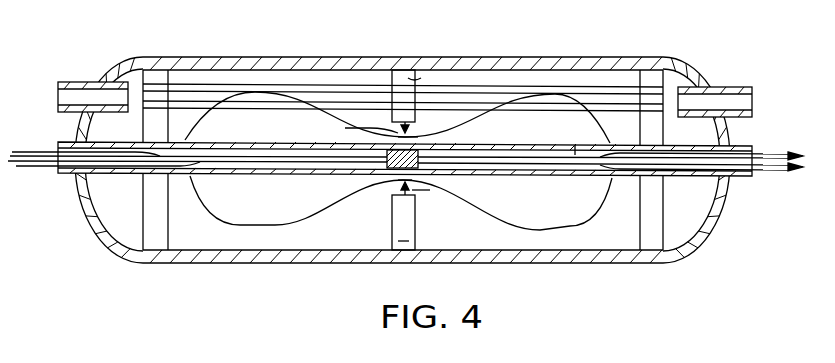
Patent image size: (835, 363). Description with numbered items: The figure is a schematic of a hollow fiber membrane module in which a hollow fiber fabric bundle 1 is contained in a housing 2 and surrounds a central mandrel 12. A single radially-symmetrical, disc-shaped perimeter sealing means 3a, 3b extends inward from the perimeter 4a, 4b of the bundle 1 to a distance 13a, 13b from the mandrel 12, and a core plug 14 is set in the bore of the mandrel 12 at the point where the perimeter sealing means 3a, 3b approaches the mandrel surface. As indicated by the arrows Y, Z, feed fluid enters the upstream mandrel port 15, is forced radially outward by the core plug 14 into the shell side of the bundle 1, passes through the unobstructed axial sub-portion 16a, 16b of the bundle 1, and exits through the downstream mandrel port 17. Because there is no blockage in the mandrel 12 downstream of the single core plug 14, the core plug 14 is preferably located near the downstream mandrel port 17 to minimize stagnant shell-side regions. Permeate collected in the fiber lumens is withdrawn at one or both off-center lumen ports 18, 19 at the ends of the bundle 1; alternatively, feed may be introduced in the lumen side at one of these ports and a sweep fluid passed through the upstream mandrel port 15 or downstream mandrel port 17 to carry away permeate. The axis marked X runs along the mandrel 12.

The hollow fiber fabric bundle 1 is at (186, 103).
The housing 2 is at (607, 58).
The perimeter sealing means 3a is at (421, 76).
The perimeter sealing means 3b is at (408, 238).
The perimeter of the bundle 4a is at (398, 70).
The perimeter of the bundle 4b is at (403, 262).
The mandrel 12 is at (278, 168).
The distance from the mandrel 13a is at (425, 138).
The distance from the mandrel 13b is at (395, 188).
The core plug 14 is at (385, 167).
The upstream mandrel port 15 is at (50, 165).
The unobstructed axial sub-portion of the bundle 16a is at (345, 128).
The unobstructed axial sub-portion of the bundle 16b is at (430, 190).
The downstream mandrel port 17 is at (758, 152).
The off-center lumen port 18 is at (80, 92).
The off-center lumen port 19 is at (743, 100).
The fiber axis X is at (575, 145).
The feed flow arrow Y is at (508, 83).
The feed flow arrow Z is at (533, 233).